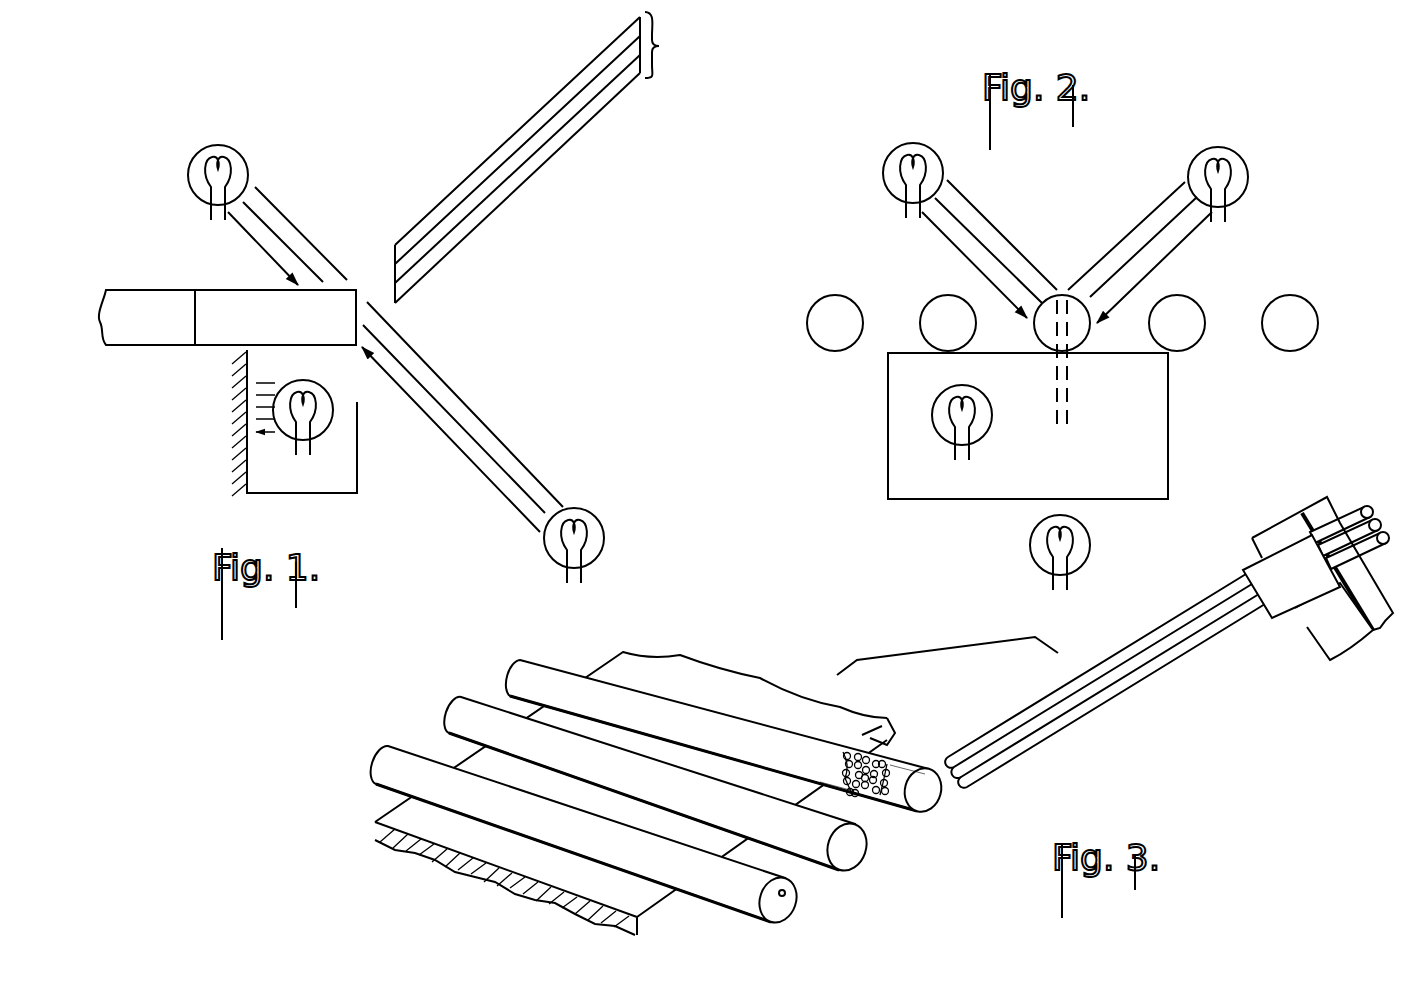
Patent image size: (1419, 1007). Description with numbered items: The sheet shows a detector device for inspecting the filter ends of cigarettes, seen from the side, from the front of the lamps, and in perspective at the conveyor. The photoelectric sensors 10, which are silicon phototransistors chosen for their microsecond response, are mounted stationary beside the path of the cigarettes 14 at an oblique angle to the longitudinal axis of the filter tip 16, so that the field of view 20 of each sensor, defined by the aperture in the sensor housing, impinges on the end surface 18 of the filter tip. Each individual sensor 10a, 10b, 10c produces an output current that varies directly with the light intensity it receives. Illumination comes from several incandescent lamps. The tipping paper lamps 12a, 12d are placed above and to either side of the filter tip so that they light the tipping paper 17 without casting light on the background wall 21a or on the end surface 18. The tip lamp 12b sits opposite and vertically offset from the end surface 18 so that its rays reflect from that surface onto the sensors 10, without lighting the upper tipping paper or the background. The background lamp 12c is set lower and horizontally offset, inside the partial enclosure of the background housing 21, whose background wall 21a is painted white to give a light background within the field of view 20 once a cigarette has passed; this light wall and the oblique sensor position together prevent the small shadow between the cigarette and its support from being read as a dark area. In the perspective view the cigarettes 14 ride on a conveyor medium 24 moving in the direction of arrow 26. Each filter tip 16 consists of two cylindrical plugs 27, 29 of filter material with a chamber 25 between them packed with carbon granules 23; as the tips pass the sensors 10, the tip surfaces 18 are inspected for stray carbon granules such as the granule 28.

In FIG. 1, the photoelectric sensors 10 is at (480, 147).
In FIG. 1, the sensor 10a is at (555, 140).
In FIG. 3, the sensor 10a is at (1022, 717).
In FIG. 1, the sensor 10b is at (578, 157).
In FIG. 3, the sensor 10b is at (1030, 728).
In FIG. 1, the sensor 10c is at (596, 167).
In FIG. 3, the sensor 10c is at (1062, 727).
In FIG. 1, the tipping paper lamp 12a is at (252, 145).
In FIG. 2, the tipping paper lamp 12a is at (888, 162).
In FIG. 1, the tip lamp 12b is at (600, 532).
In FIG. 2, the tip lamp 12b is at (1090, 538).
In FIG. 1, the background lamp 12c is at (333, 425).
In FIG. 2, the background lamp 12c is at (930, 422).
In FIG. 1, the tipping paper lamp 12d is at (276, 152).
In FIG. 2, the tipping paper lamp 12d is at (1250, 176).
In FIG. 1, the cigarette 14 is at (138, 347).
In FIG. 3, the cigarette 14 is at (478, 693).
In FIG. 1, the filter tip 16 is at (233, 300).
In FIG. 3, the filter tip 16 is at (810, 838).
In FIG. 2, the tipping paper 17 is at (1320, 338).
In FIG. 2, the end surface of filter tip 18 is at (1290, 318).
In FIG. 3, the end surface of filter tip 18 is at (933, 802).
In FIG. 2, the field of view 20 is at (1067, 428).
In FIG. 1, the background housing 21 is at (310, 497).
In FIG. 1, the background wall 21a is at (233, 460).
In FIG. 2, the background wall 21a is at (1170, 417).
In FIG. 3, the carbon granules 23 is at (877, 730).
In FIG. 3, the conveyor medium 24 is at (740, 678).
In FIG. 3, the chamber 25 is at (847, 750).
In FIG. 3, the arrow 26 is at (450, 924).
In FIG. 3, the cylindrical plug 27 is at (920, 757).
In FIG. 3, the carbon granule 28 is at (790, 894).
In FIG. 3, the cylindrical plug 29 is at (835, 777).